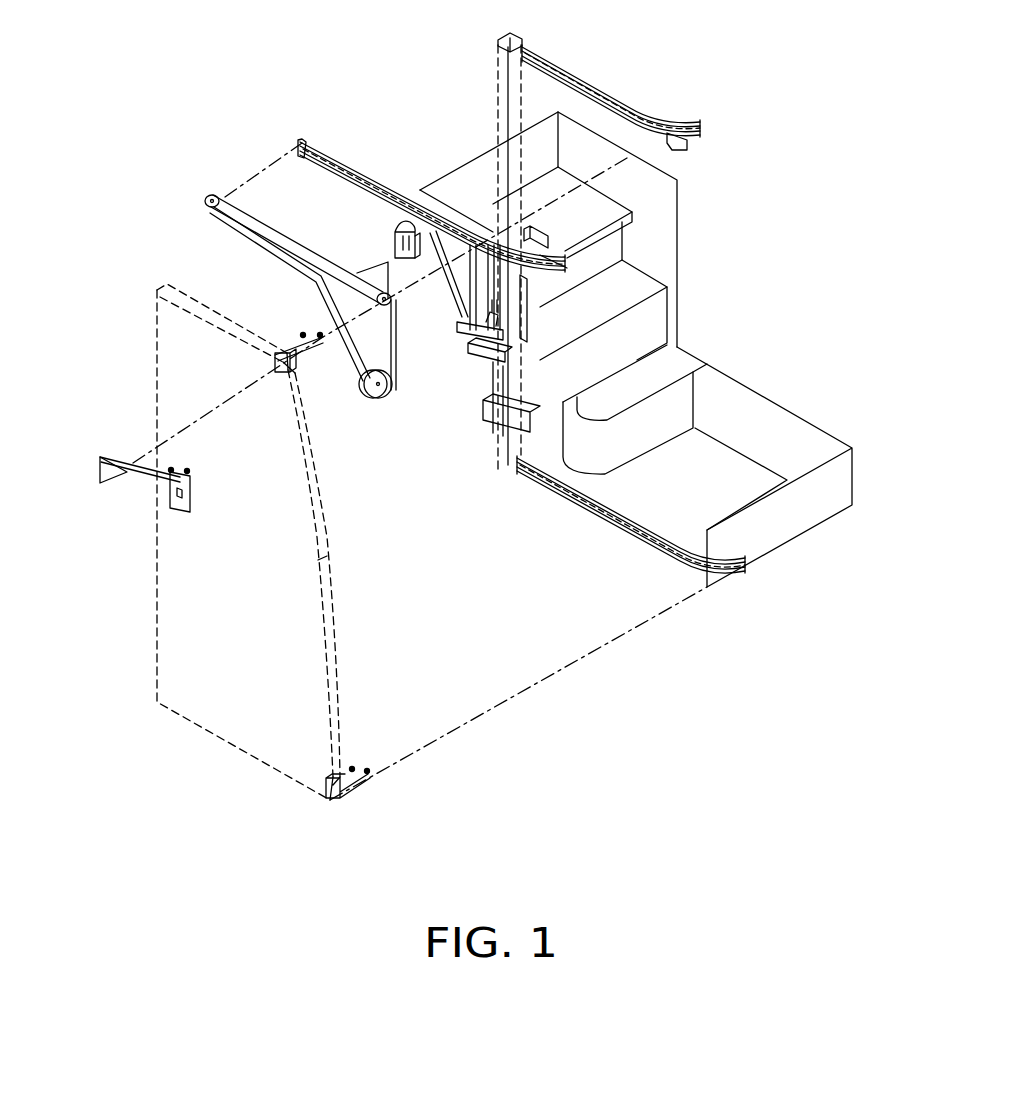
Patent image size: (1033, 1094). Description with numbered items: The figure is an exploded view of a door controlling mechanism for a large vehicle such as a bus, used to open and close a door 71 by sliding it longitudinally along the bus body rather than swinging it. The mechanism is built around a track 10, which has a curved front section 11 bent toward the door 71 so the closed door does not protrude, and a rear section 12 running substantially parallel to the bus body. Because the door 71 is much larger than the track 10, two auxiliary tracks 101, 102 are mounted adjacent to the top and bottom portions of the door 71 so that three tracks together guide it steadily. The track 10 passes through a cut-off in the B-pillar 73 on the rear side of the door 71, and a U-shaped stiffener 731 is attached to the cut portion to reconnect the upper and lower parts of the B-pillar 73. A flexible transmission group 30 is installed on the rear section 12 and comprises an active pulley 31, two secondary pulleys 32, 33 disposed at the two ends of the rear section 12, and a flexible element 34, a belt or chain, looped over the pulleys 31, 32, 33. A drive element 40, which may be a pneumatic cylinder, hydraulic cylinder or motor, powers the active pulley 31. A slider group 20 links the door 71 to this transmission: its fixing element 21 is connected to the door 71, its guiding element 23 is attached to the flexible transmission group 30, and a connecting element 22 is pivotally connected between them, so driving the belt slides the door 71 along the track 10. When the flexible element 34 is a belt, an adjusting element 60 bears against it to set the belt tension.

The track 10 is at (399, 187).
The curved front section 11 is at (567, 275).
The rear section 12 is at (295, 133).
The slider group 20 is at (256, 537).
The fixing element 21 is at (192, 472).
The connecting element 22 is at (200, 415).
The guiding element 23 is at (318, 277).
The flexible transmission group 30 is at (287, 275).
The active pulley 31 is at (388, 397).
The secondary pulley 32 is at (393, 295).
The secondary pulley 33 is at (213, 197).
The flexible element 34 is at (282, 250).
The drive element 40 is at (493, 432).
The adjusting element 60 is at (392, 242).
The door 71 is at (158, 313).
The B-pillar 73 is at (500, 78).
The auxiliary track 101 is at (678, 118).
The auxiliary track 102 is at (572, 505).
The stiffener 731 is at (540, 232).